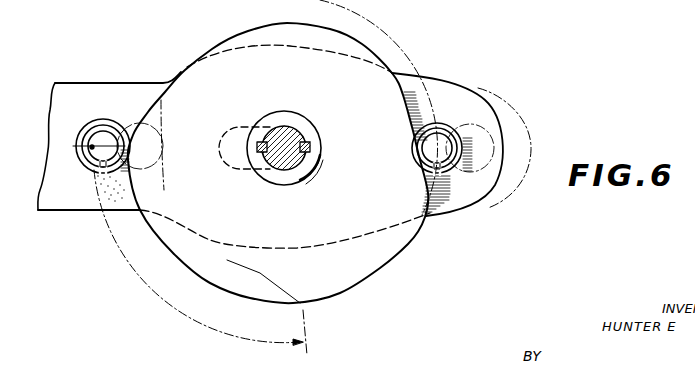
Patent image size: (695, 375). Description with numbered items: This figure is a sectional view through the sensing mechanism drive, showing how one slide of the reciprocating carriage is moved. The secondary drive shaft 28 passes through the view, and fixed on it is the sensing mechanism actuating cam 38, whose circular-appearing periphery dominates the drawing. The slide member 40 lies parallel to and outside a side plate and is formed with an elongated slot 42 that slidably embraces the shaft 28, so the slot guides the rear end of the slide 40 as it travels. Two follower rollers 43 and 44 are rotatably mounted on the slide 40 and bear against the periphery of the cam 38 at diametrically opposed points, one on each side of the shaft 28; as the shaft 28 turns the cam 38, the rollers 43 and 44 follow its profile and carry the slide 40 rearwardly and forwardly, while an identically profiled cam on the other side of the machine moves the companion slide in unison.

The slide member 40 is at (100, 82).
The follower roller 43 is at (101, 121).
The elongated slot 42 is at (228, 138).
The secondary drive shaft 28 is at (297, 127).
The follower roller 44 is at (438, 125).
The sensing mechanism actuating cam 38 is at (381, 262).